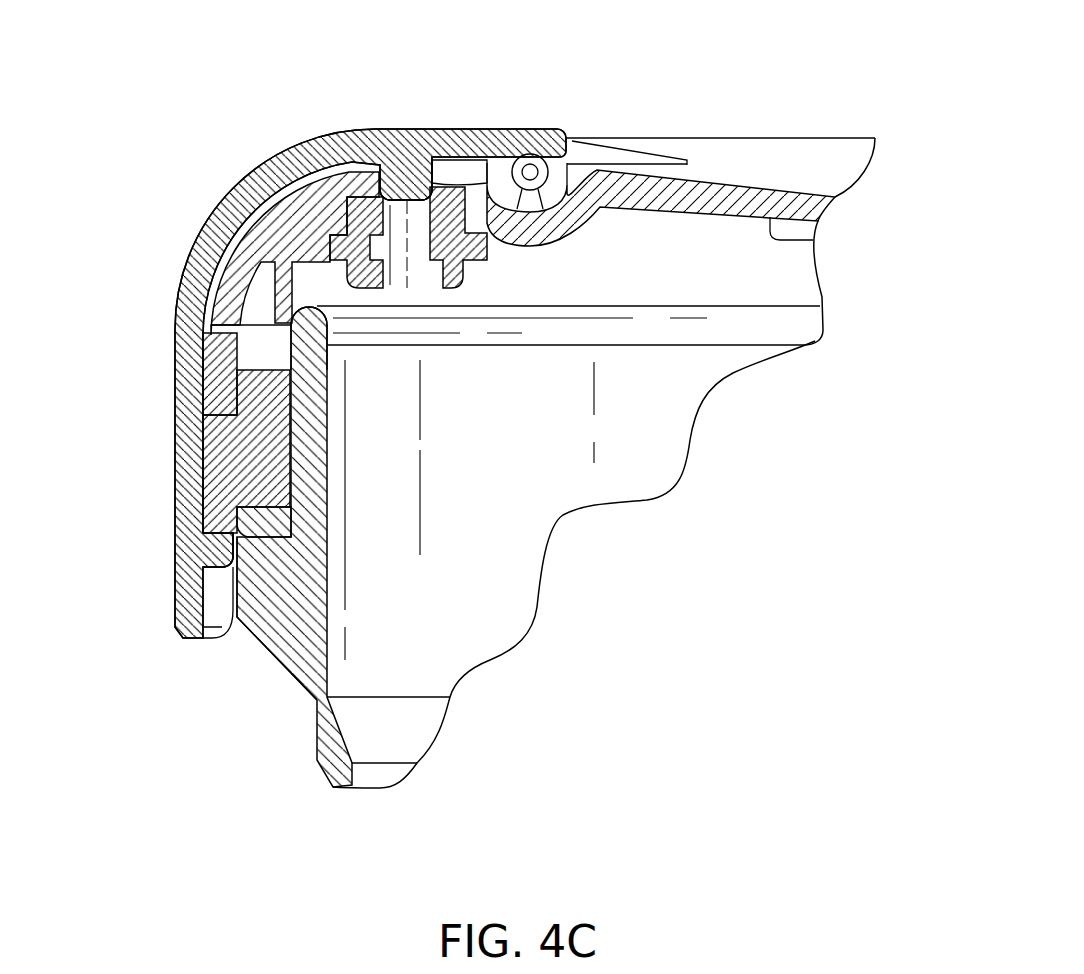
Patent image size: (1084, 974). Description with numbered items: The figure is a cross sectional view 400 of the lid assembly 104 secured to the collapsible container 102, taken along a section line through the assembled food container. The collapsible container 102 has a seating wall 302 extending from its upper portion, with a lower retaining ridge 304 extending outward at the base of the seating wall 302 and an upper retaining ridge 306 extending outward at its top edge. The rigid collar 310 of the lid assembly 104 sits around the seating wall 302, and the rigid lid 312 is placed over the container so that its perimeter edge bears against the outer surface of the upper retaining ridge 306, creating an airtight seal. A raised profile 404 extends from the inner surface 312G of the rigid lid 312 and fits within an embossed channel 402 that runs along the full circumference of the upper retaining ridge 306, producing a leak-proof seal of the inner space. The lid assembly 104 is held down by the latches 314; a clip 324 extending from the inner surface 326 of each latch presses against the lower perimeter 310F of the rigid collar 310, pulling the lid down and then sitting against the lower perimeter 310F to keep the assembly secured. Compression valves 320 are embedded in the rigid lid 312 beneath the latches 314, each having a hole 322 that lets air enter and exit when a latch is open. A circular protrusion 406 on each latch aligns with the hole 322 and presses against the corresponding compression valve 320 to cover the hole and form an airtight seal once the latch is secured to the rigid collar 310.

The lid assembly 104 is at (213, 157).
The cross sectional view 400 is at (781, 60).
The collapsible container 102 is at (578, 598).
The rigid lid 312 is at (207, 260).
The inner surface of the rigid lid 312G is at (808, 242).
The raised profile 404 is at (287, 275).
The circular protrusion 406 is at (407, 187).
The hole 322 is at (352, 190).
The compression valves 320 is at (443, 197).
The inner surface of the latches 326 is at (200, 325).
The upper retaining ridge 306 is at (207, 423).
The rigid collar 310 is at (242, 455).
The embossed channel 402 is at (303, 340).
The seating wall 302 is at (293, 525).
The lower retaining ridge 304 is at (260, 535).
The latches 314 is at (172, 538).
The clip 324 is at (225, 568).
The lower perimeter of the rigid collar 310F is at (258, 533).